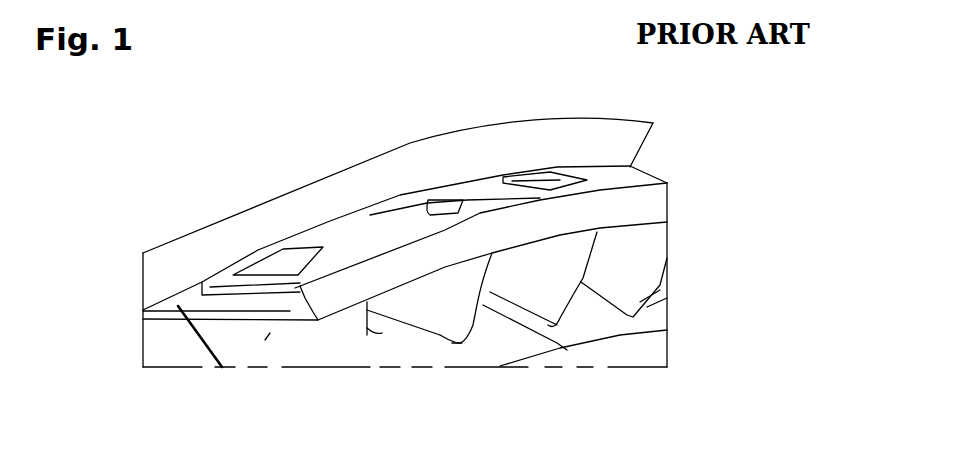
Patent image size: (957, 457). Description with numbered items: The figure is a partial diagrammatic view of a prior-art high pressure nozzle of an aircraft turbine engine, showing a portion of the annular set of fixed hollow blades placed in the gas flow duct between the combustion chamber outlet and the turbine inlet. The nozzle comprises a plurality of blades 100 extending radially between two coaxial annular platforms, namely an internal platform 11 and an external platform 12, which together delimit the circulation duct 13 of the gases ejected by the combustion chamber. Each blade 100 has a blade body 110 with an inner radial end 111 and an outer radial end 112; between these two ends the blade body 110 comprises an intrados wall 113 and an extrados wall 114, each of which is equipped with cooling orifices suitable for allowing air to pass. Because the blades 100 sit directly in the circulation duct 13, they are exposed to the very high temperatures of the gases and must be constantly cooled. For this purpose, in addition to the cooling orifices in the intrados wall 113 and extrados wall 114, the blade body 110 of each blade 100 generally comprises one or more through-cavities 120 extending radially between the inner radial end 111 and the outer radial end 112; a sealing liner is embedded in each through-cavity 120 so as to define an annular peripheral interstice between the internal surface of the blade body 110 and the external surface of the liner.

The blade 100 is at (663, 252).
The blade body 110 is at (217, 162).
The outer radial end 112 is at (363, 237).
The through-cavity 120 is at (300, 248).
The external platform 12 is at (667, 183).
The internal platform 11 is at (640, 322).
The circulation duct 13 is at (600, 305).
The inner radial end 111 is at (457, 343).
The intrados wall 113 is at (265, 340).
The extrados wall 114 is at (383, 332).